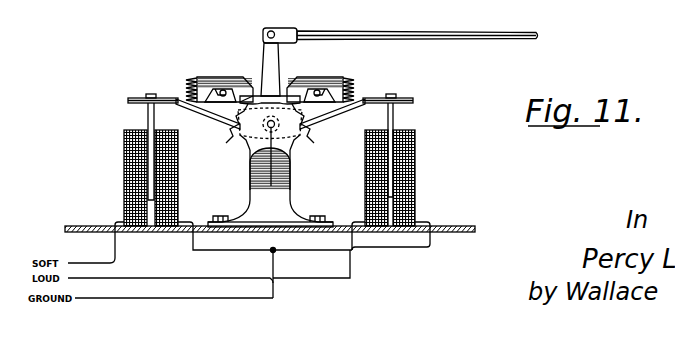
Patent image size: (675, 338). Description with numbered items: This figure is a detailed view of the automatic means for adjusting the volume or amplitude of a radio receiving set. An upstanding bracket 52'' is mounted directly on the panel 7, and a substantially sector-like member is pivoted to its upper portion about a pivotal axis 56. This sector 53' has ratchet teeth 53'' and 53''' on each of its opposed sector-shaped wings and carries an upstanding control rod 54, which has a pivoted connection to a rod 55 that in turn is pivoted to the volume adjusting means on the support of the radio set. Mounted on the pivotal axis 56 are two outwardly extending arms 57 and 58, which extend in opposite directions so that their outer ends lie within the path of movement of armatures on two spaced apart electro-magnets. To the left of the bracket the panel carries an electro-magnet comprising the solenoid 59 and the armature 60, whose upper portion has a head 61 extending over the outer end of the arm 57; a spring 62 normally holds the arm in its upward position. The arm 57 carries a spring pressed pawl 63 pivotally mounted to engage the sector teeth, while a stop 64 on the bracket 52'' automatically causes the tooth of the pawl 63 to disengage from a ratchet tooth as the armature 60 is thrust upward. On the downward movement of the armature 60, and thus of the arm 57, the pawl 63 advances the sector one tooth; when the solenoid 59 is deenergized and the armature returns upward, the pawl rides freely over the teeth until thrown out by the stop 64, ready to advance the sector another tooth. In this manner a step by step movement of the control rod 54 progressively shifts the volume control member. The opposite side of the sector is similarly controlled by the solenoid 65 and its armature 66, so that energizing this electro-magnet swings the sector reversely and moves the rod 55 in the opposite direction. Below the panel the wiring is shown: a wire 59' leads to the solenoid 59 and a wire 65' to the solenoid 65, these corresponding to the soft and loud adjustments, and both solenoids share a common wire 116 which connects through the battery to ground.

The panel 7 is at (85, 226).
The upstanding bracket 52'' is at (270, 188).
The sector 53' is at (257, 149).
The ratchet teeth 53'' is at (226, 132).
The ratchet teeth 53''' is at (316, 132).
The control rod 54 is at (281, 64).
The rod 55 is at (388, 32).
The pivotal axis 56 is at (286, 184).
The arm 57 is at (214, 125).
The arm 58 is at (320, 118).
The solenoid 59 is at (133, 178).
The wire 59' is at (210, 244).
The armature 60 is at (147, 117).
The head 61 is at (130, 98).
The spring 62 is at (186, 89).
The pawl 63 is at (225, 77).
The stop 64 is at (248, 83).
The solenoid 65 is at (408, 164).
The wire 65' is at (375, 263).
The armature 66 is at (398, 116).
The common wire 116 is at (306, 251).